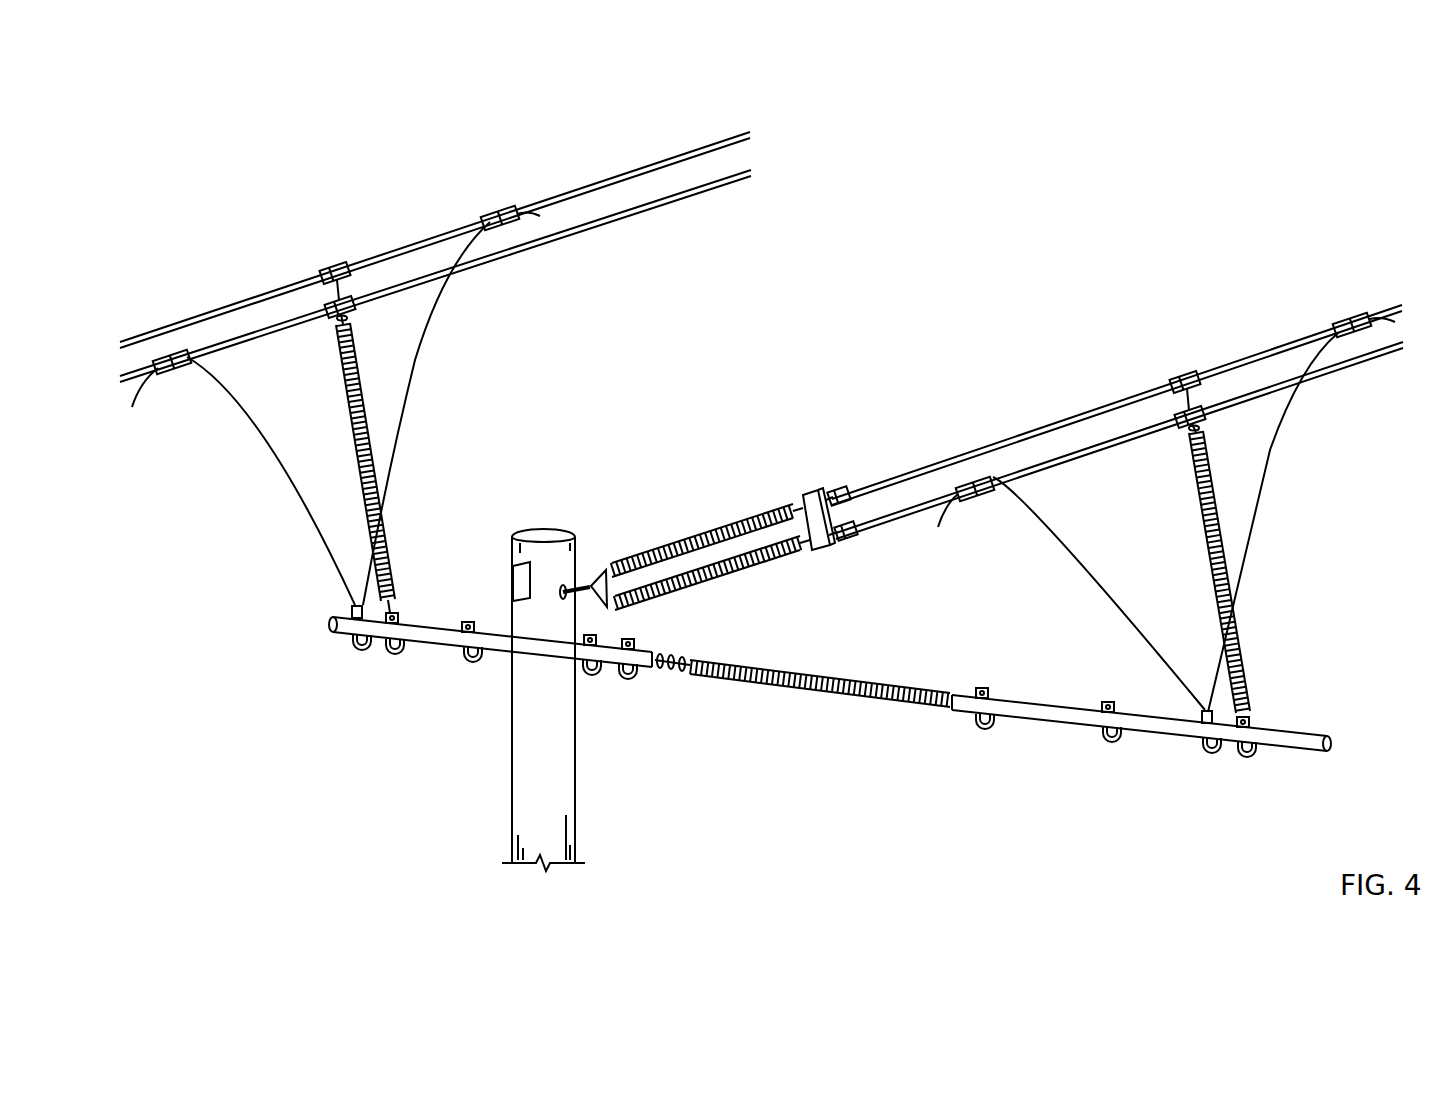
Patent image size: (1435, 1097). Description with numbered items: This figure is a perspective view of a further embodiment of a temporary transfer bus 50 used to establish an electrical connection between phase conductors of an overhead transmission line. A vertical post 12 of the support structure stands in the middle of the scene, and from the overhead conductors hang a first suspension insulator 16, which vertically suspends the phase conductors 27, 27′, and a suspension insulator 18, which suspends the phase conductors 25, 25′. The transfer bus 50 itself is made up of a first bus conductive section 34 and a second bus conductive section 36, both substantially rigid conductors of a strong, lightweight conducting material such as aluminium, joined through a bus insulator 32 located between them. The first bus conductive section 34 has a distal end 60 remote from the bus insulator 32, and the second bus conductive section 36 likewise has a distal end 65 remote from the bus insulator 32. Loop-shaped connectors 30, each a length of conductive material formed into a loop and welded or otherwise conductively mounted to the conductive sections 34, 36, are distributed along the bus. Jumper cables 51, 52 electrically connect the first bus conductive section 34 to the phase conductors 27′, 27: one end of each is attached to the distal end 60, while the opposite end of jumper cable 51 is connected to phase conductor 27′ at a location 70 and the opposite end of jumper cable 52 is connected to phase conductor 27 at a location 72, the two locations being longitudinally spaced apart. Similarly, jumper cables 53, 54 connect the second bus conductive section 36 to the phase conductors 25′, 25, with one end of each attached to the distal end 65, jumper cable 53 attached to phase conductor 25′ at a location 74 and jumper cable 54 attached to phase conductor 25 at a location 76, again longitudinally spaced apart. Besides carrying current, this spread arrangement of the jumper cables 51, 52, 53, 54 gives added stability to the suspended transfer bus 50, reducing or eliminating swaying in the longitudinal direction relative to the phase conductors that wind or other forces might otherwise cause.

The vertical post 12 is at (555, 782).
The first suspension insulator 16 is at (348, 407).
The suspension insulator 18 is at (1247, 670).
The first phase conductor 25 is at (877, 482).
The phase conductor 25′ is at (880, 518).
The second phase conductor 27 is at (627, 172).
The phase conductor 27′ is at (605, 218).
The loop-shaped connector 30 is at (630, 680).
The bus insulator 32 is at (780, 678).
The first bus conductive section 34 is at (448, 640).
The second bus conductive section 36 is at (1065, 717).
The transfer bus 50 is at (1148, 768).
The jumper cable 51 is at (262, 430).
The jumper cable 52 is at (430, 333).
The jumper cable 53 is at (1072, 543).
The jumper cable 54 is at (1273, 467).
The distal end 60 is at (400, 672).
The distal end 65 is at (1235, 768).
The location 70 is at (165, 338).
The location 72 is at (497, 170).
The location 74 is at (975, 450).
The location 76 is at (1351, 292).